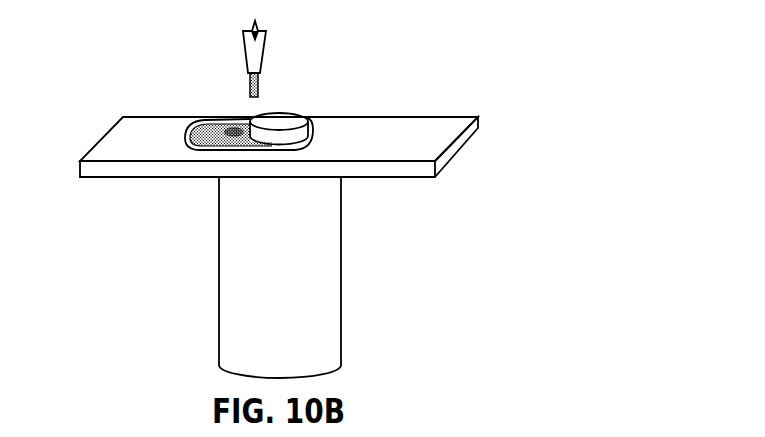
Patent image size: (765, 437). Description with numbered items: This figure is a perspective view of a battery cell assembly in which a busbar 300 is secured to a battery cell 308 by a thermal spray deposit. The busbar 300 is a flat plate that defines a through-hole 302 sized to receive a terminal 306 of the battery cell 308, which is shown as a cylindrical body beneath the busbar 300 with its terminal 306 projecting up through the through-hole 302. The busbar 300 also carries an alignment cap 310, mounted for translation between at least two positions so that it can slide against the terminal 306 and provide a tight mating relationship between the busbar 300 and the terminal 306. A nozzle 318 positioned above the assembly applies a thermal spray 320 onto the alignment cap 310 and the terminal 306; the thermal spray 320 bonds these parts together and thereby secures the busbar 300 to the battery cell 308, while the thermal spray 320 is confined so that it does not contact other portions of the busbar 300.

The busbar 300 is at (171, 177).
The through-hole 302 is at (313, 139).
The terminal 306 is at (305, 116).
The battery cell 308 is at (312, 298).
The alignment cap 310 is at (189, 134).
The nozzle 318 is at (266, 43).
The thermal spray 320 is at (233, 132).